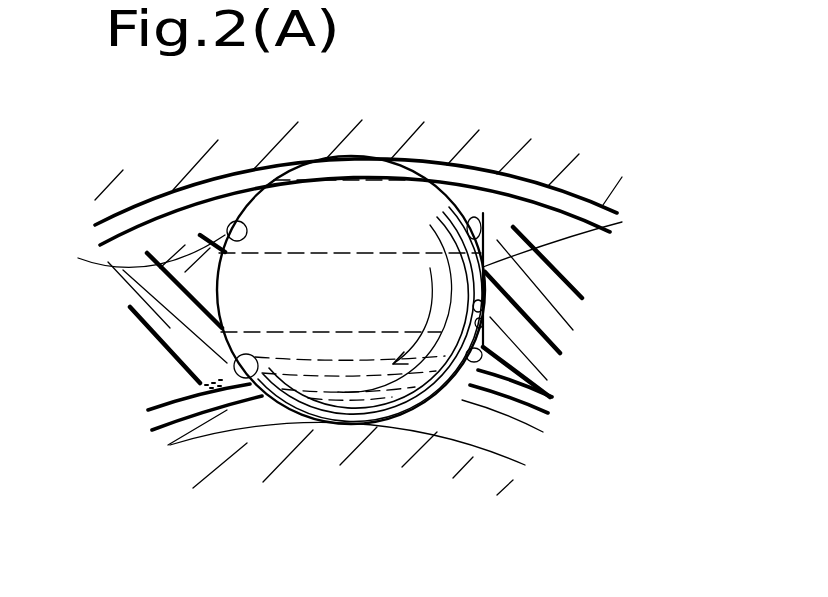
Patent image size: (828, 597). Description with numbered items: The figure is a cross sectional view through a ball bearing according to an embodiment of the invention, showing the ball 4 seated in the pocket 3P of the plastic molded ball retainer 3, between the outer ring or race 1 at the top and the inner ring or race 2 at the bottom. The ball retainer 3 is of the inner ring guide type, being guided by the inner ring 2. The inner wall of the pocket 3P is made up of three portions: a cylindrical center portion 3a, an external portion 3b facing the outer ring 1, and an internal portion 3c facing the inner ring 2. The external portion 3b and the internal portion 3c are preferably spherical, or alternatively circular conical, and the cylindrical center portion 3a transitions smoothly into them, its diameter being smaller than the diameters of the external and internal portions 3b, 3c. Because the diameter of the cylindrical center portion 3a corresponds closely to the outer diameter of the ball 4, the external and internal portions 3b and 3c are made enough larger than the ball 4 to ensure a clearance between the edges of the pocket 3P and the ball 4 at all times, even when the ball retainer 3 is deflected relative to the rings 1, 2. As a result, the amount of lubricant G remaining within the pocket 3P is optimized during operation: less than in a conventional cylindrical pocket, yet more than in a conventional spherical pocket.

The outer ring 1 is at (540, 166).
The inner ring 2 is at (385, 440).
The ball retainer 3 is at (553, 292).
The pocket 3P is at (603, 201).
The cylindrical center portion 3a is at (483, 325).
The external portion 3b is at (233, 223).
The internal portion 3c is at (250, 400).
The ball 4 is at (297, 207).
The lubricant G is at (148, 270).